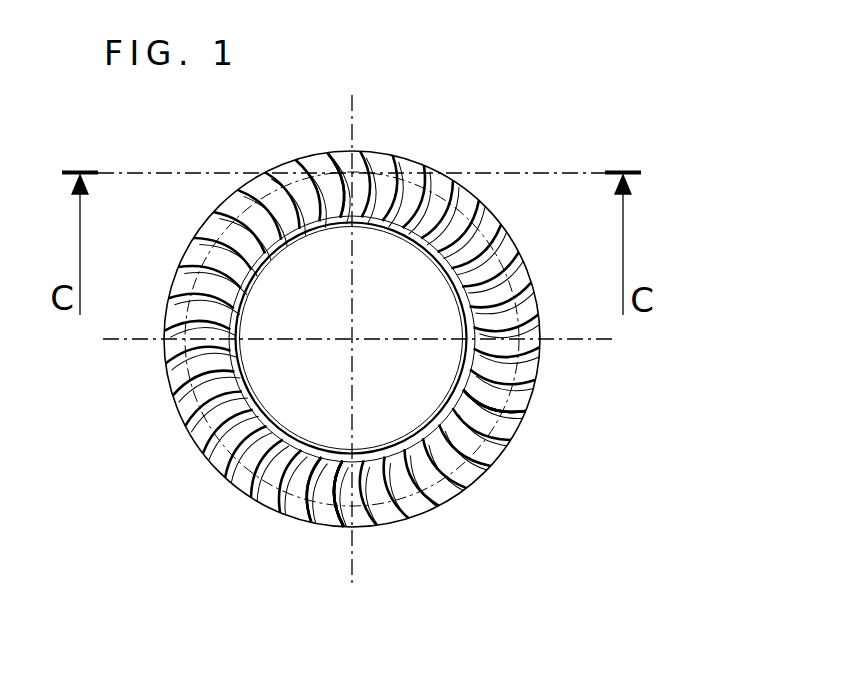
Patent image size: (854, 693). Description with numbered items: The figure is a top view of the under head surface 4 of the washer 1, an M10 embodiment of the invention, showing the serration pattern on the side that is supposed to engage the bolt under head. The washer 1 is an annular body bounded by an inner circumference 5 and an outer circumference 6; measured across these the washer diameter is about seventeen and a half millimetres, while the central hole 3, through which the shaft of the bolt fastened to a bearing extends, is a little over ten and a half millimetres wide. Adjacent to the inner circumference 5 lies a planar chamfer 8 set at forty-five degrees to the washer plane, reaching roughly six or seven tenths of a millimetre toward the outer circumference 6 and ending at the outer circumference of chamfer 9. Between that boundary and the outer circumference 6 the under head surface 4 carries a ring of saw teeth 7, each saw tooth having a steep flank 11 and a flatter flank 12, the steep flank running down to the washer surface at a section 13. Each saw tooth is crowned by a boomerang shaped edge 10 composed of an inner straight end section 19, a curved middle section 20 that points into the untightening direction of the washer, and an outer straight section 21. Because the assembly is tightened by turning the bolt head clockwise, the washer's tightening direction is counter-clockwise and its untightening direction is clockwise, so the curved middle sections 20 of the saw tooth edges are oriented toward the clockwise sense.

The washer 1 is at (424, 356).
The central hole of the washer 3 is at (293, 283).
The under head surface 4 is at (318, 339).
The inner circumference 5 is at (333, 225).
The outer circumference 6 is at (290, 185).
The saw tooth 7 is at (210, 462).
The chamfer 8 is at (456, 400).
The outer circumference of chamfer 9 is at (422, 432).
The edge of saw tooth 10 is at (333, 507).
The steep flank of saw tooth 11 is at (338, 513).
The flatter flank of saw tooth 12 is at (322, 493).
The section where steep flank ends at washer surface 13 is at (337, 487).
The inner straight end section of saw tooth edge 19 is at (470, 392).
The curved middle section of saw tooth edge 20 is at (487, 407).
The outer straight section of saw tooth edge 21 is at (497, 411).